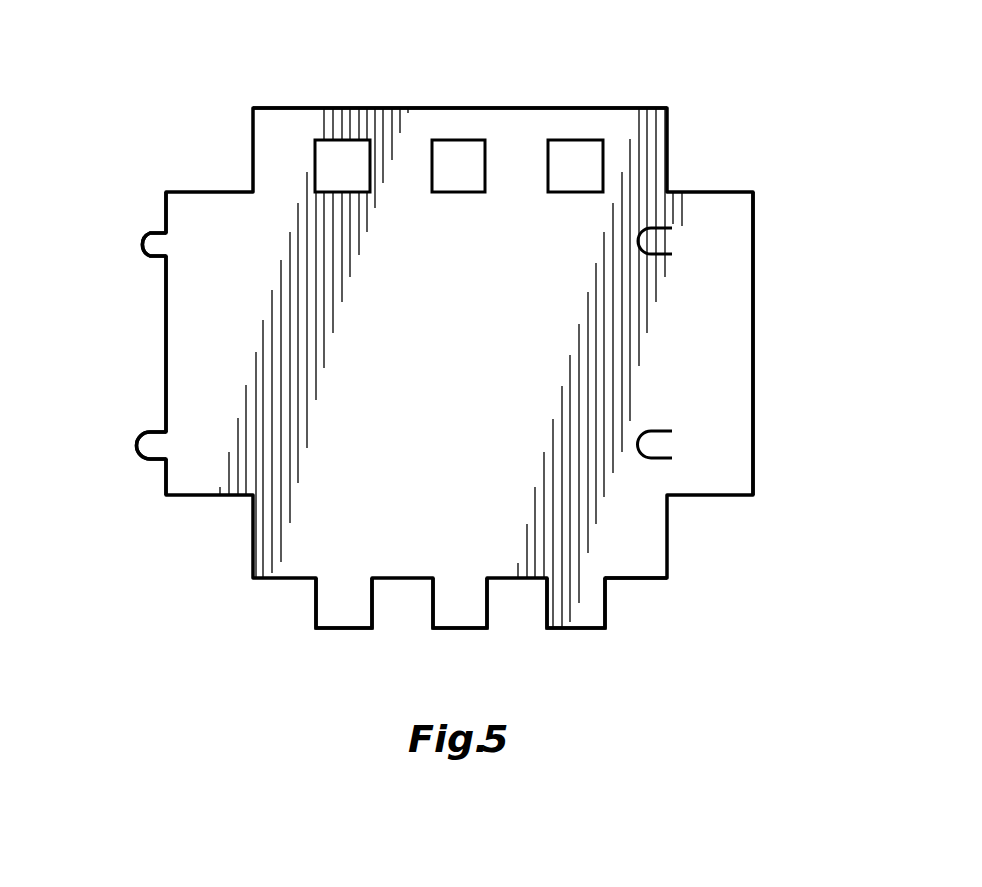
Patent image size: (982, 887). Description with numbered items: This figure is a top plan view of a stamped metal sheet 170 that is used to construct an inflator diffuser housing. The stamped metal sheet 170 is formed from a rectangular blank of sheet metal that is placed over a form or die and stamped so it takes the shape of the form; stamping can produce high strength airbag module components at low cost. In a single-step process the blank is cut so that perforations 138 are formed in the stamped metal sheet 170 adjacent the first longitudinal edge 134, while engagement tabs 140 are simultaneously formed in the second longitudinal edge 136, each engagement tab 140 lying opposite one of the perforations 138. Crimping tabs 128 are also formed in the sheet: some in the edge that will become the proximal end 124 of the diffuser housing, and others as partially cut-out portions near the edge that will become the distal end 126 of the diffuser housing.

The stamped metal sheet 170 is at (737, 108).
The first longitudinal edge 134 is at (268, 108).
The proximal end 124 is at (166, 334).
The distal end 126 is at (753, 347).
The second longitudinal edge 136 is at (647, 580).
The crimping tabs 128 is at (148, 242).
The perforations 138 is at (333, 153).
The engagement tabs 140 is at (337, 620).